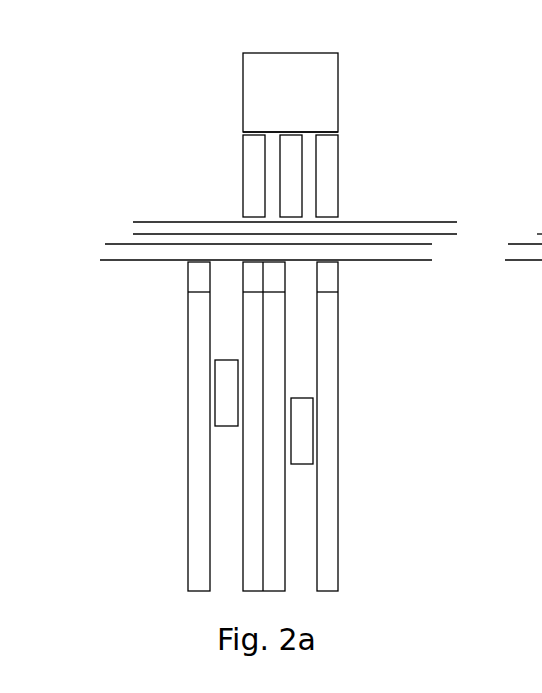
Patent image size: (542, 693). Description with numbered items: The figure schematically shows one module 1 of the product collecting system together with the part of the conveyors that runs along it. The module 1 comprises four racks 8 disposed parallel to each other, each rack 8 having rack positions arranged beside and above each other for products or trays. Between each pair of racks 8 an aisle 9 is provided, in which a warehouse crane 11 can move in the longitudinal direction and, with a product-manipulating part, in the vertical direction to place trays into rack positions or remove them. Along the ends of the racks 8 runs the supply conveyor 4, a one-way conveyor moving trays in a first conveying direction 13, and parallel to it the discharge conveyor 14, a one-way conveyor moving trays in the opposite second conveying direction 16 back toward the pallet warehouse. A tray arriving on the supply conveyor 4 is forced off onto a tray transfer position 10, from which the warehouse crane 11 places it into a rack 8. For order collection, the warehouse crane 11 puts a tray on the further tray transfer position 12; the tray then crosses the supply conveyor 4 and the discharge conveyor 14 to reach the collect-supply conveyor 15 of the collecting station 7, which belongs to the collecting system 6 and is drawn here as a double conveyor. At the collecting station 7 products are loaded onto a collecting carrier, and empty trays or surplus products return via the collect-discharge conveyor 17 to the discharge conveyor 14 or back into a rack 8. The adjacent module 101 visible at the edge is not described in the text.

The module 1 is at (112, 510).
The supply conveyor 4 is at (120, 253).
The collecting system 6 is at (426, 132).
The collecting station 7 is at (212, 130).
The rack 8 is at (163, 535).
The aisle 9 is at (311, 541).
The tray transfer position 10 is at (190, 278).
The warehouse crane 11 is at (220, 398).
The further tray transfer position 12 is at (245, 275).
The first conveying direction 13 is at (97, 252).
The discharge conveyor 14 is at (393, 222).
The collect-supply conveyor 15 is at (245, 181).
The second conveying direction 16 is at (433, 232).
The collect-discharge conveyor 17 is at (292, 156).
The second device 101 is at (541, 545).